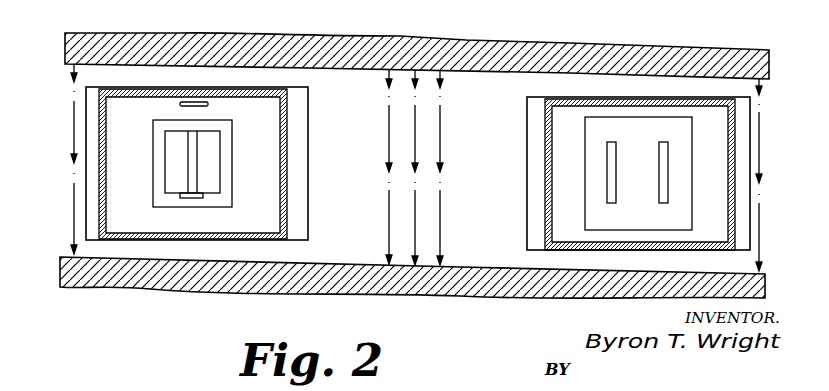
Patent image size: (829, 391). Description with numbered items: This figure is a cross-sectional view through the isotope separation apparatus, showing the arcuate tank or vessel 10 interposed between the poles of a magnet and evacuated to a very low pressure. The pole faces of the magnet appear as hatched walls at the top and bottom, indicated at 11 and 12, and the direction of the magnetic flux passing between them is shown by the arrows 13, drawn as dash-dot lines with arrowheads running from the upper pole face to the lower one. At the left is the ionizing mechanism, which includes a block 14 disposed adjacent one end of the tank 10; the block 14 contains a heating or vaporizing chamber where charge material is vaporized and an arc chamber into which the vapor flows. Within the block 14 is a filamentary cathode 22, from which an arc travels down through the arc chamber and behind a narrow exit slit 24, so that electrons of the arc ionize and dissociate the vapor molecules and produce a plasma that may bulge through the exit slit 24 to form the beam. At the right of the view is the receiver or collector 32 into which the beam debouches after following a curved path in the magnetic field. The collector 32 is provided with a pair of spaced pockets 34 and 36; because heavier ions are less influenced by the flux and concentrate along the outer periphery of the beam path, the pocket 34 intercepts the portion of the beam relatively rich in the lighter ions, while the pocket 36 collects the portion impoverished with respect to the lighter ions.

The tank 10 is at (290, 143).
The pole face 11 is at (466, 41).
The pole face 12 is at (150, 283).
The arrows 13 is at (74, 132).
The block 14 is at (240, 172).
The filamentary cathode 22 is at (194, 100).
The exit slit 24 is at (195, 145).
The collector 32 is at (603, 113).
The pocket 34 is at (611, 144).
The pocket 36 is at (663, 147).